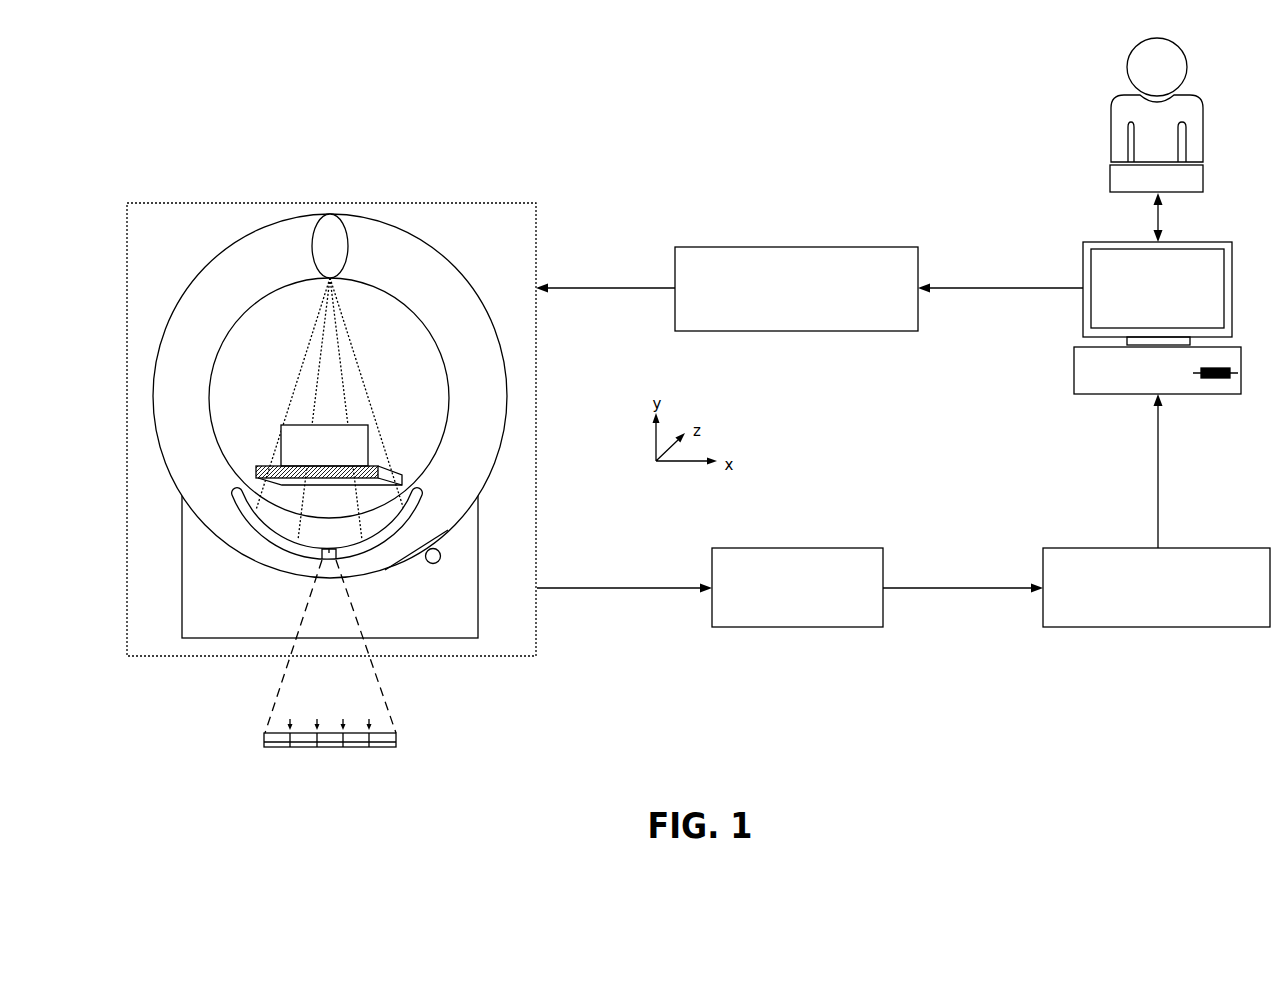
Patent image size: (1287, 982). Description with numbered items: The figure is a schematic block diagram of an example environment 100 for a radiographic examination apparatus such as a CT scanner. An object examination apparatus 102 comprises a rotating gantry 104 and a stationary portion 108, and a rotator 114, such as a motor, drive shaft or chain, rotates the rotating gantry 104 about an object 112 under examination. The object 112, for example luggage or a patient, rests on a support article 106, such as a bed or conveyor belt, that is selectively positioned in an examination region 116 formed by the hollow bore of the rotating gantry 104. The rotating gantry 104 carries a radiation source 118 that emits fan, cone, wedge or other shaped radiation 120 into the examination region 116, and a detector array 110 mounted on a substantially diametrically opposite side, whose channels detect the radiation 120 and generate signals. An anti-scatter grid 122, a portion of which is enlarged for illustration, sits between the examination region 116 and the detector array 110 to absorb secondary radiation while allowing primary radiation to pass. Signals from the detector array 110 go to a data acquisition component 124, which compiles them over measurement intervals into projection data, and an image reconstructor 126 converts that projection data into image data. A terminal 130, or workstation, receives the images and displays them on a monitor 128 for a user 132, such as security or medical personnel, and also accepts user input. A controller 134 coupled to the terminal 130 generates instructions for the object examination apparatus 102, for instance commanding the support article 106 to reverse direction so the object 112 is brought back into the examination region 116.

The example environment 100 is at (210, 87).
The object examination apparatus 102 is at (517, 203).
The rotating gantry 104 is at (490, 320).
The support article 106 is at (403, 475).
The stationary portion 108 is at (478, 618).
The detector array 110 is at (420, 503).
The object 112 is at (368, 445).
The rotator 114 is at (441, 558).
The examination region 116 is at (340, 402).
The radiation source 118 is at (360, 218).
The radiation 120 is at (297, 378).
The anti-scatter grid 122 is at (308, 702).
The data acquisition component 124 is at (712, 548).
The image reconstructor 126 is at (1043, 548).
The monitor 128 is at (1083, 242).
The terminal 130 is at (1074, 375).
The user 132 is at (1111, 108).
The controller 134 is at (675, 247).